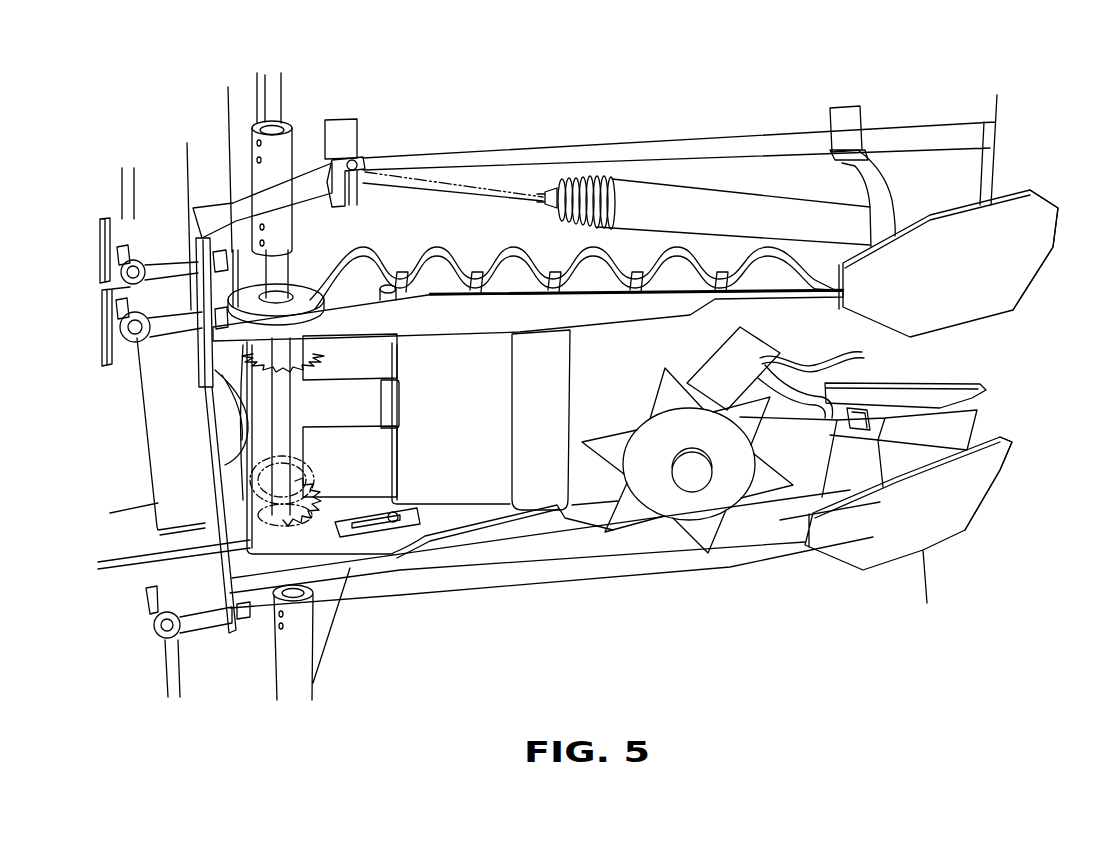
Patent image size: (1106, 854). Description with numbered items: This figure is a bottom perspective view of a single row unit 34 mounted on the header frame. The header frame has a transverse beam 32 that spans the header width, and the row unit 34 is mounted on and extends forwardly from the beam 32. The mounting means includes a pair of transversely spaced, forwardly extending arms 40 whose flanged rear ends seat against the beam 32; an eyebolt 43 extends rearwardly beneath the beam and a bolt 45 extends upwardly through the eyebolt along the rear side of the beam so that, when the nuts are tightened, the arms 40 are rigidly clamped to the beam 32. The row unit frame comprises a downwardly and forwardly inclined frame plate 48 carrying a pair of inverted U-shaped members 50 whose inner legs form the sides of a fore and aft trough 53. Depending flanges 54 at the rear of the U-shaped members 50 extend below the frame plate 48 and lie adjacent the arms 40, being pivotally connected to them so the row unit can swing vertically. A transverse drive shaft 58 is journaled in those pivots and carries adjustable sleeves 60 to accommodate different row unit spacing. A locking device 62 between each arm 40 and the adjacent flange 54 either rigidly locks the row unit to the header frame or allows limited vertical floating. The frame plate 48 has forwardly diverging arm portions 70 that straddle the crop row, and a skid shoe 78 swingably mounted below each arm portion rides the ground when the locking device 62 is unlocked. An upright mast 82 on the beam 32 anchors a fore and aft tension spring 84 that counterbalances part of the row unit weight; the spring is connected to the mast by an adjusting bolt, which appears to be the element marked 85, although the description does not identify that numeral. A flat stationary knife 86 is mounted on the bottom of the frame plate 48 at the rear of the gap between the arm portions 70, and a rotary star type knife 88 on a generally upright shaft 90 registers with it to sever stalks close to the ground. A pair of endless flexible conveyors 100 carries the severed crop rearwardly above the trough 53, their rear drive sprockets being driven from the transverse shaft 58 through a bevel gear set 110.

The transverse beam 32 is at (160, 447).
The row unit 34 is at (992, 343).
The arms 40 is at (328, 292).
The eyebolt 43 is at (205, 610).
The bolt 45 is at (153, 607).
The frame plate 48 is at (460, 463).
The inverted U-shaped members 50 is at (356, 368).
The trough 53 is at (389, 404).
The depending flanges 54 is at (498, 322).
The transverse drive shaft 58 is at (272, 92).
The adjustable sleeves 60 is at (288, 138).
The locking device 62 is at (388, 547).
The forwardly diverging arm portions 70 is at (865, 323).
The skid shoe 78 is at (1027, 279).
The upright mast 82 is at (235, 207).
The tension spring 84 is at (613, 185).
The tension rod 85 is at (468, 190).
The stationary knife 86 is at (722, 352).
The rotary star type knife 88 is at (665, 395).
The upright shaft 90 is at (700, 478).
The endless flexible conveyors 100 is at (522, 236).
The bevel gear set 110 is at (320, 502).